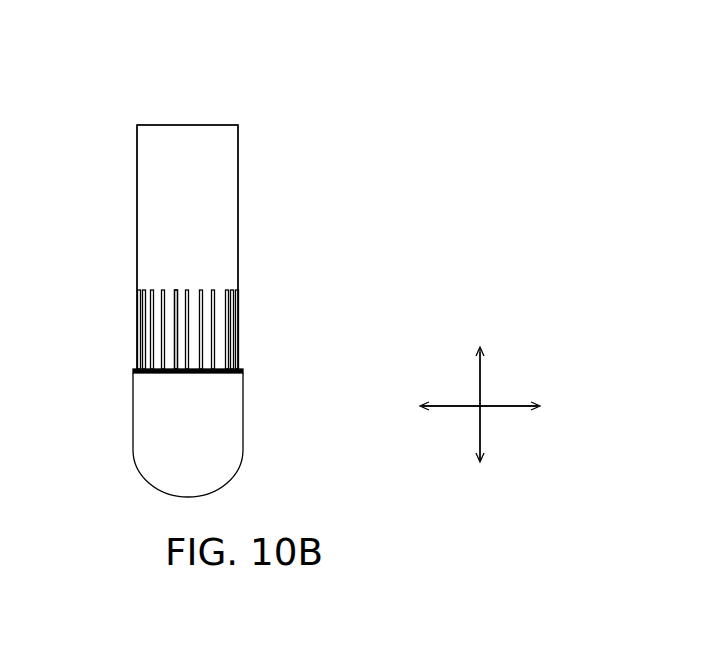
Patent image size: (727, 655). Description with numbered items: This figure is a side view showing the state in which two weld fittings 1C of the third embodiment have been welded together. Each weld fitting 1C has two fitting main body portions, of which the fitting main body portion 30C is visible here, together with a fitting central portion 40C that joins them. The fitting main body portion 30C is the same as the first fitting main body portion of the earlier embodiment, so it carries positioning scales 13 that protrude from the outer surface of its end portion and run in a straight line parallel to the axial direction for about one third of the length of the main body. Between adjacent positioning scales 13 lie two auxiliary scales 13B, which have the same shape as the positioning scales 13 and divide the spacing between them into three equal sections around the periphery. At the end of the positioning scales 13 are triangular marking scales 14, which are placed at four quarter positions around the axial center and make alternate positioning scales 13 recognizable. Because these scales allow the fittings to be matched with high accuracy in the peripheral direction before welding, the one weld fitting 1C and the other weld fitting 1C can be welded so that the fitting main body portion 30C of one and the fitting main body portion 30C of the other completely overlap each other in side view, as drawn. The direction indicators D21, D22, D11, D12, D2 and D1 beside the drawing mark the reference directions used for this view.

The weld fitting 1C is at (149, 78).
The fitting main body portion 30C is at (213, 108).
The positioning scales 13 is at (213, 305).
The auxiliary scales 13B is at (176, 290).
The marking scales 14 is at (192, 361).
The fitting central portion 40C is at (255, 411).
The upward direction D21 is at (479, 365).
The downward direction D22 is at (479, 449).
The leftward direction D11 is at (427, 407).
The rightward direction D12 is at (535, 407).
The second direction axis D2 is at (478, 388).
The first direction axis D1 is at (502, 408).